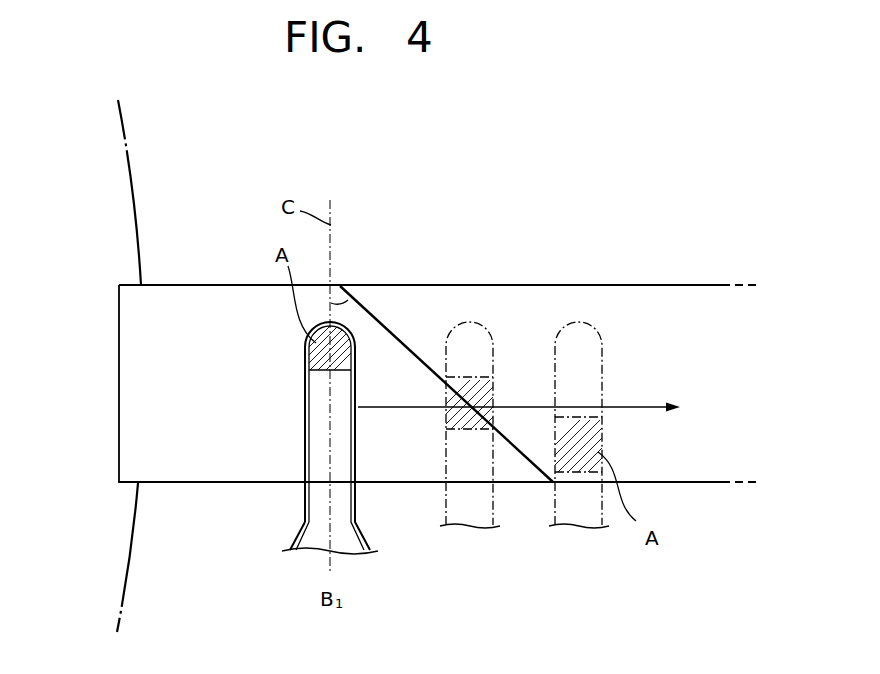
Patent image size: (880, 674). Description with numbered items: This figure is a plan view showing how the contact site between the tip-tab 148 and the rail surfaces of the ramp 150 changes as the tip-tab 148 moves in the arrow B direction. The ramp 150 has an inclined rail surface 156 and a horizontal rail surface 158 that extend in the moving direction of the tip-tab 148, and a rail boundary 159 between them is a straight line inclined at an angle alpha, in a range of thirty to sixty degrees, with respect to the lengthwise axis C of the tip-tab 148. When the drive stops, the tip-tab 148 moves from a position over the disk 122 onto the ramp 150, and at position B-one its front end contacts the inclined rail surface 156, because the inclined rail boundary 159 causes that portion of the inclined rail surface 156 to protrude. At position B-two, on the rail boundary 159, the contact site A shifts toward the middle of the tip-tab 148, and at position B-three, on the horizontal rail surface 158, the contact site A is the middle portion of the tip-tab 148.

The disk 122 is at (124, 205).
The tip-tab 148 is at (318, 429).
The ramp 150 is at (514, 268).
The inclined rail surface 156 is at (131, 380).
The horizontal rail surface 158 is at (467, 301).
The rail boundary 159 is at (387, 318).